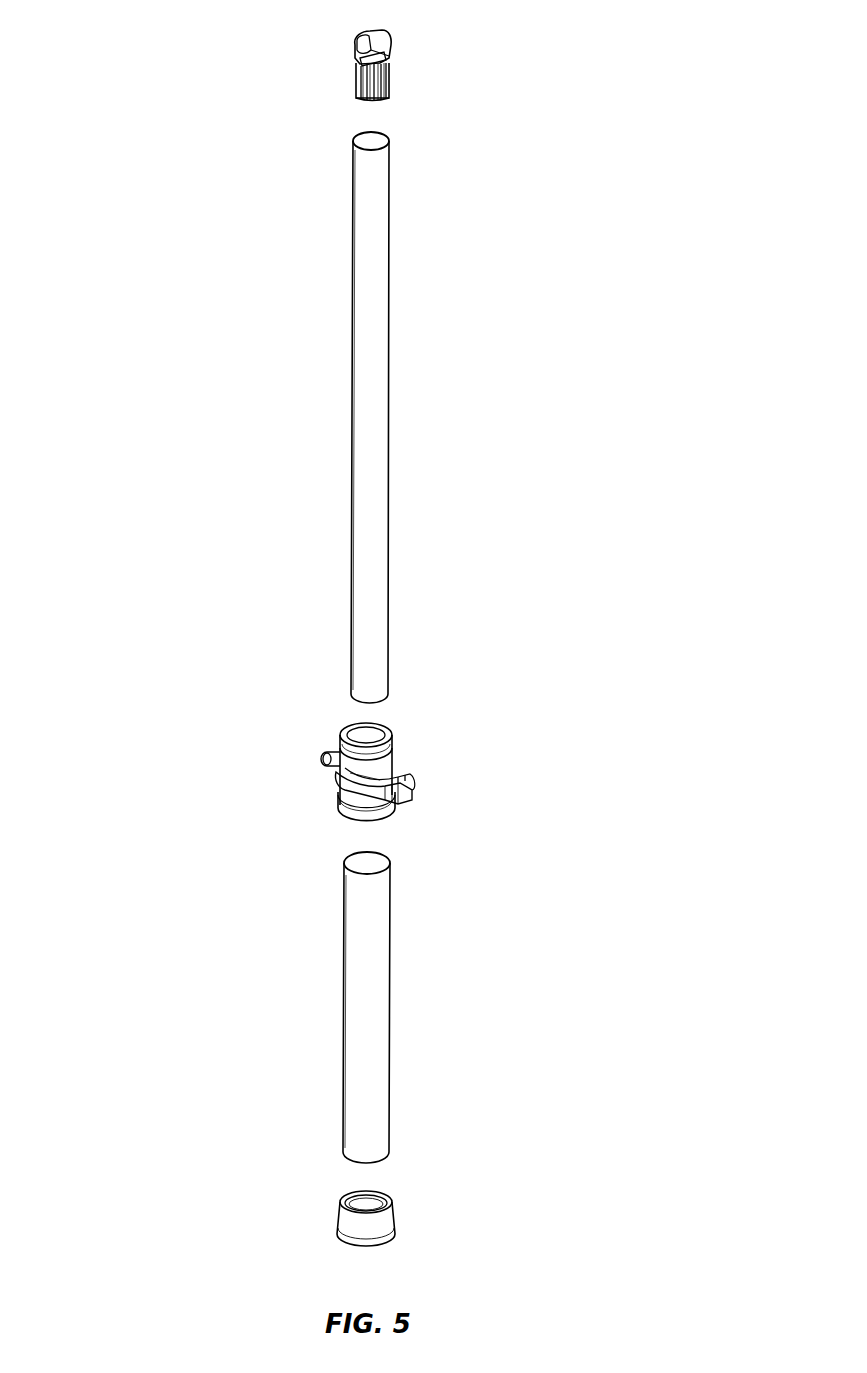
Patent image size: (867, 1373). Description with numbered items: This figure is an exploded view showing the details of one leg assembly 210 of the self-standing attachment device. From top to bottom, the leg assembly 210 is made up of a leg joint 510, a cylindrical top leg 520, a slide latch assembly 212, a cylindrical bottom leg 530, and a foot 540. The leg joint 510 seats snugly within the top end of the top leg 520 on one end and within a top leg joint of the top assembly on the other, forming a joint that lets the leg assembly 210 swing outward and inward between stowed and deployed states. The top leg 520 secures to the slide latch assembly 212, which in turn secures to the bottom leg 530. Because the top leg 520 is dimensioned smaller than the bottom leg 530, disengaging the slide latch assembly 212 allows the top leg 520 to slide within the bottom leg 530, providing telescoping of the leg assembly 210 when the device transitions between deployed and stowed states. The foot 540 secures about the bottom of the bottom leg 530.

The leg assembly 210 is at (172, 112).
The leg joint 510 is at (391, 44).
The top leg 520 is at (383, 437).
The slide latch assembly 212 is at (418, 782).
The bottom leg 530 is at (388, 1031).
The foot 540 is at (394, 1220).